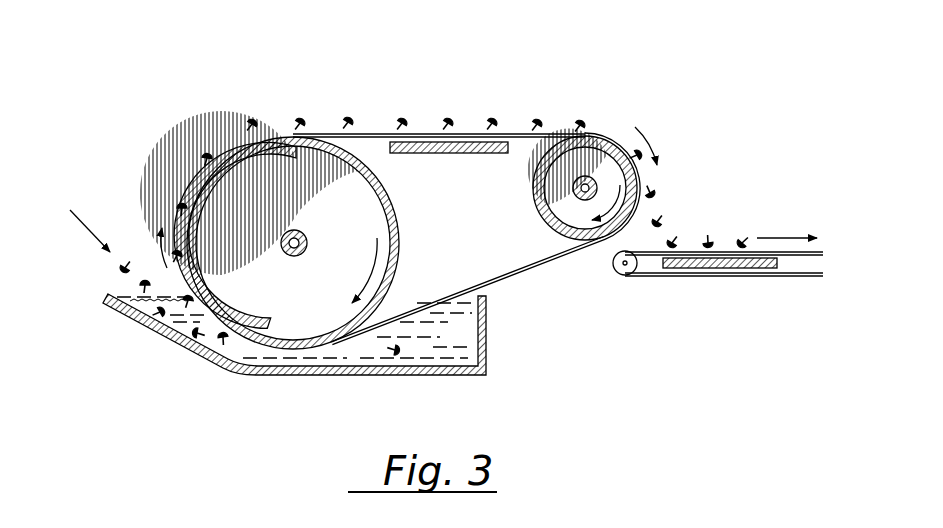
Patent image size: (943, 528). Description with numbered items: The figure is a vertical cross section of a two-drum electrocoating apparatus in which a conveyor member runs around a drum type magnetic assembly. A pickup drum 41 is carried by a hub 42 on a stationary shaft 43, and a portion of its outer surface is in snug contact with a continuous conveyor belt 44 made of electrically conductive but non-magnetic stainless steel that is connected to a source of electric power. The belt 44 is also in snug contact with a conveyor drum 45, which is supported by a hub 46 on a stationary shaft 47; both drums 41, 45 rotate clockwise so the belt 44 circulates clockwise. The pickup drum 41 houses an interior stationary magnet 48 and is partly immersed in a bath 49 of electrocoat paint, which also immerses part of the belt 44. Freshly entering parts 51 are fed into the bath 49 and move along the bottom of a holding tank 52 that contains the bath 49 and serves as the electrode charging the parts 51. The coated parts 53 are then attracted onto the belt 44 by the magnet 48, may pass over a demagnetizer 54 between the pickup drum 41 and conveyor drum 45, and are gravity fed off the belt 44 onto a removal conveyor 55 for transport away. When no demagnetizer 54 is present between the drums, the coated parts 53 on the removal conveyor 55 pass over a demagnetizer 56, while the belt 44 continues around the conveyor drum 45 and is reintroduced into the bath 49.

The pickup drum 41 is at (392, 276).
The hub 42 is at (299, 232).
The stationary shaft 43 is at (301, 255).
The conveyor belt 44 is at (520, 272).
The conveyor drum 45 is at (562, 240).
The hub 46 is at (578, 183).
The stationary shaft 47 is at (581, 197).
The stationary magnet 48 is at (258, 320).
The bath 49 is at (396, 353).
The parts 51 is at (197, 338).
The holding tank 52 is at (488, 352).
The coated parts 53 is at (180, 204).
The demagnetizer 54 is at (422, 154).
The removal conveyor 55 is at (790, 250).
The demagnetizer 56 is at (700, 270).